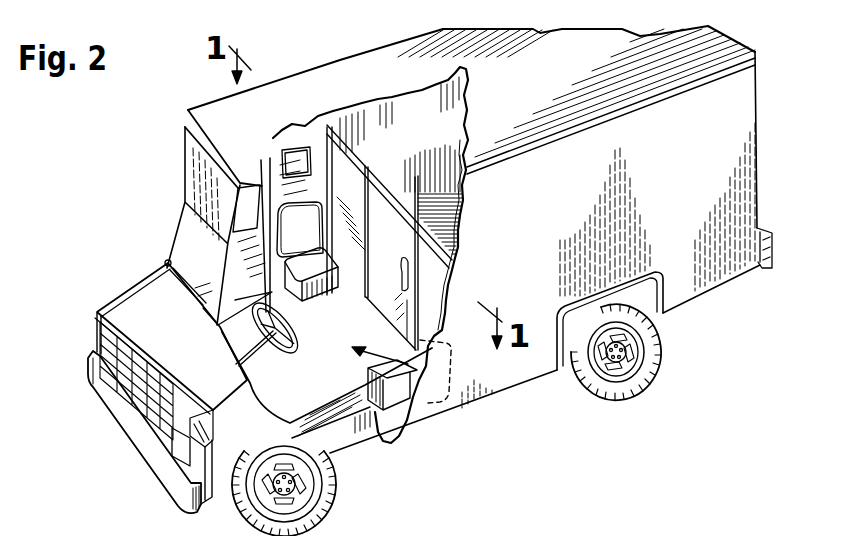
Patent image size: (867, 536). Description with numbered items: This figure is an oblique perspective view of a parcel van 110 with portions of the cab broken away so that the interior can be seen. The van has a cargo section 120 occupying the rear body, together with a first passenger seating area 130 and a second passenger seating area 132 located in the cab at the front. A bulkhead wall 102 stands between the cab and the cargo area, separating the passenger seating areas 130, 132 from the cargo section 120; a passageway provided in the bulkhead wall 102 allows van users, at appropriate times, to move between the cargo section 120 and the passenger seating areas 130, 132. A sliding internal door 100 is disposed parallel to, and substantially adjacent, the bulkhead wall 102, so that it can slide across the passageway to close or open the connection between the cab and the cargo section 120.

The sliding internal door 100 is at (376, 215).
The bulkhead wall 102 is at (337, 180).
The parcel van 110 is at (197, 101).
The cargo section 120 is at (462, 137).
The first passenger seating area 130 is at (325, 407).
The second passenger seating area 132 is at (427, 403).